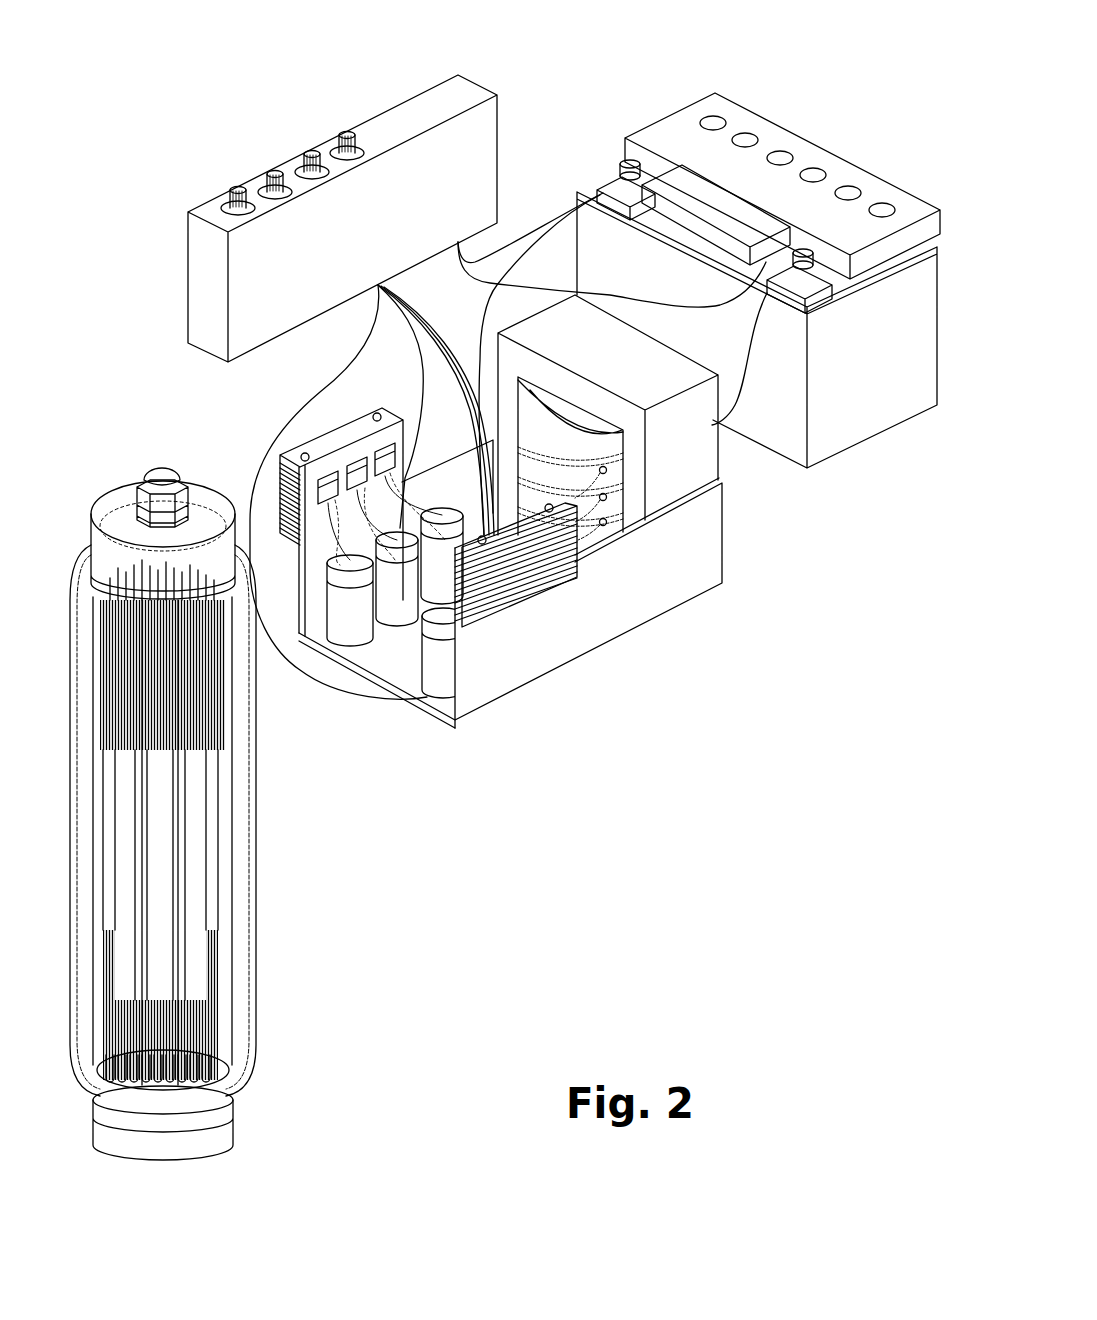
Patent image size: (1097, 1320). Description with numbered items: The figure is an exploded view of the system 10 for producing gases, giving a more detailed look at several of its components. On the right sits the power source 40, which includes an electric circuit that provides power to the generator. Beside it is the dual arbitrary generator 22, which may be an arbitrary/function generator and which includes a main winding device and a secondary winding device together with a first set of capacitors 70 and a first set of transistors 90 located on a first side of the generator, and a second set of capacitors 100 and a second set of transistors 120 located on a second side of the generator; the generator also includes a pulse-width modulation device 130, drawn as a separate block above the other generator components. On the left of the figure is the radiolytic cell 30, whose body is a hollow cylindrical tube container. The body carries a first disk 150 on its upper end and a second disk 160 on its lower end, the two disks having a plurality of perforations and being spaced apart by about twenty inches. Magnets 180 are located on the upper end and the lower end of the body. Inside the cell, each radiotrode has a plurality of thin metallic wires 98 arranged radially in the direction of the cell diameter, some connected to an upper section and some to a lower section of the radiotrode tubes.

The system for producing gases 10 is at (733, 618).
The dual arbitrary generator 22 is at (653, 373).
The radiolytic cell 30 is at (205, 502).
The power source 40 is at (770, 142).
The first set of capacitors 70 is at (392, 600).
The first set of transistors 90 is at (355, 432).
The thin metallic wires 98 is at (217, 687).
The second set of capacitors 100 is at (440, 663).
The second set of transistors 120 is at (513, 572).
The pulse-width modulation device 130 is at (385, 130).
The first disk 150 is at (128, 557).
The second disk 160 is at (174, 1143).
The magnets 180 is at (93, 530).